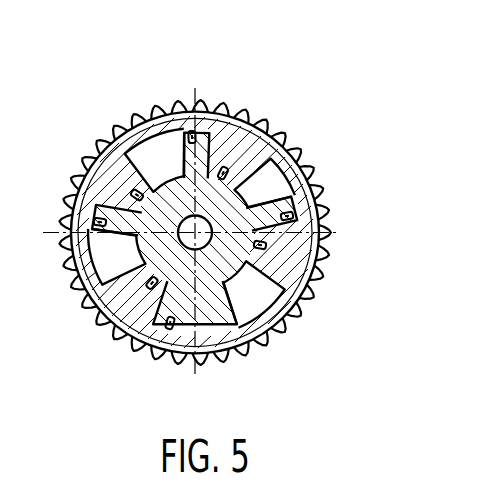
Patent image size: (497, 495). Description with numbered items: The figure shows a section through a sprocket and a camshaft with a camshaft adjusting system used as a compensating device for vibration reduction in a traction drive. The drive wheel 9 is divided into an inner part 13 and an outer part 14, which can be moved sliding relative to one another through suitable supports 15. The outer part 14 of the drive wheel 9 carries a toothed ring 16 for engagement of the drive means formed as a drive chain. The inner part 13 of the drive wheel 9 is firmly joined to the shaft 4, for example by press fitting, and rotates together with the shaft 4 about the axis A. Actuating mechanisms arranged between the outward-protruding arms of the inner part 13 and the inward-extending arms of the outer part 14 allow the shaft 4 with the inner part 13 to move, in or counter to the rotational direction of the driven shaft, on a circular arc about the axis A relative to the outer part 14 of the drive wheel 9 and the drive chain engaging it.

The shaft 4 is at (318, 196).
The drive wheel 9 is at (275, 107).
The inner part 13 is at (220, 348).
The outer part 14 is at (243, 112).
The supports 15 is at (312, 246).
The toothed ring 16 is at (297, 158).
The axis A is at (280, 333).